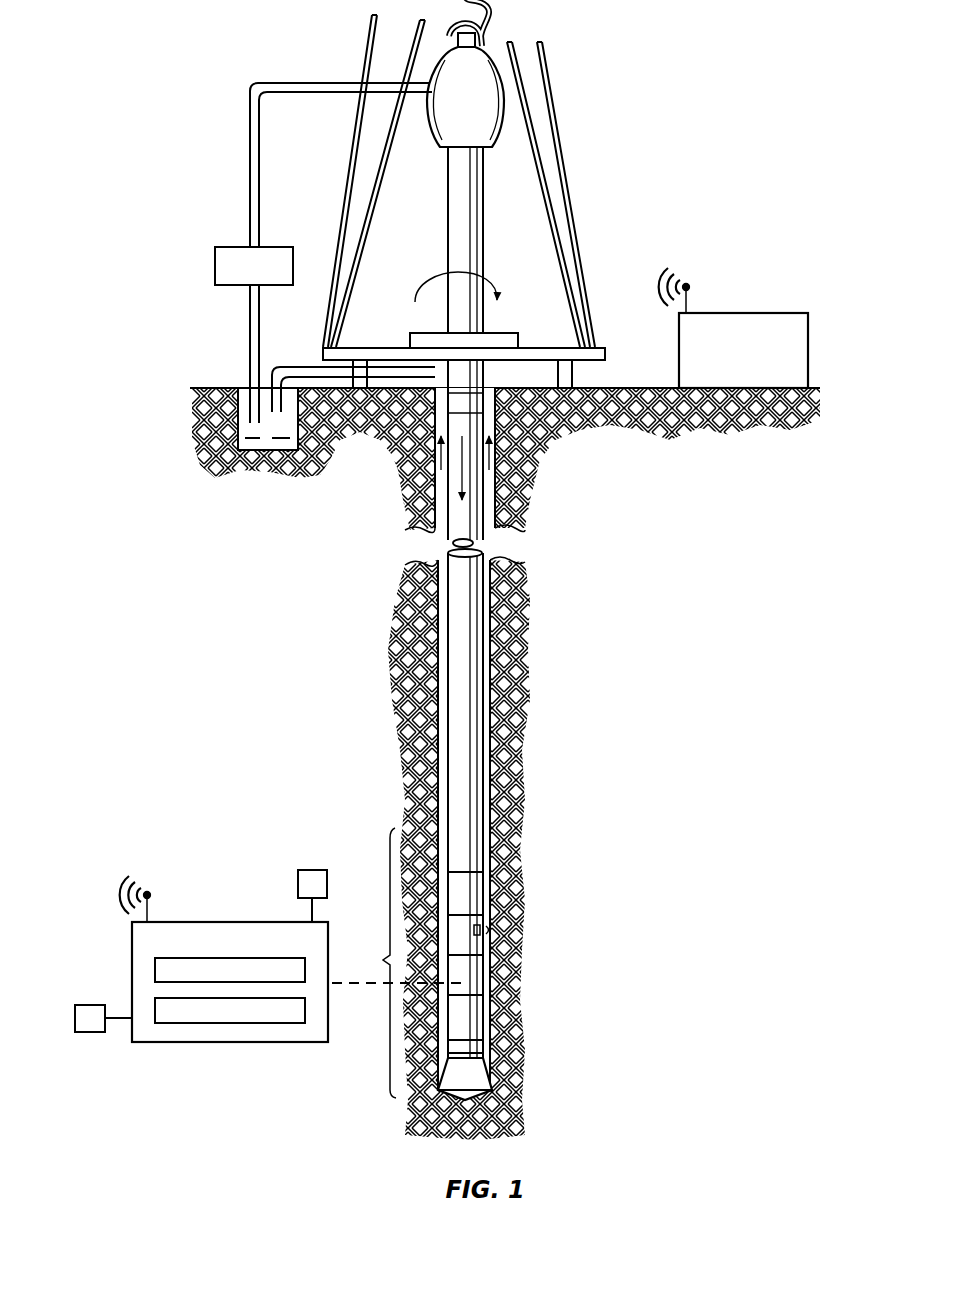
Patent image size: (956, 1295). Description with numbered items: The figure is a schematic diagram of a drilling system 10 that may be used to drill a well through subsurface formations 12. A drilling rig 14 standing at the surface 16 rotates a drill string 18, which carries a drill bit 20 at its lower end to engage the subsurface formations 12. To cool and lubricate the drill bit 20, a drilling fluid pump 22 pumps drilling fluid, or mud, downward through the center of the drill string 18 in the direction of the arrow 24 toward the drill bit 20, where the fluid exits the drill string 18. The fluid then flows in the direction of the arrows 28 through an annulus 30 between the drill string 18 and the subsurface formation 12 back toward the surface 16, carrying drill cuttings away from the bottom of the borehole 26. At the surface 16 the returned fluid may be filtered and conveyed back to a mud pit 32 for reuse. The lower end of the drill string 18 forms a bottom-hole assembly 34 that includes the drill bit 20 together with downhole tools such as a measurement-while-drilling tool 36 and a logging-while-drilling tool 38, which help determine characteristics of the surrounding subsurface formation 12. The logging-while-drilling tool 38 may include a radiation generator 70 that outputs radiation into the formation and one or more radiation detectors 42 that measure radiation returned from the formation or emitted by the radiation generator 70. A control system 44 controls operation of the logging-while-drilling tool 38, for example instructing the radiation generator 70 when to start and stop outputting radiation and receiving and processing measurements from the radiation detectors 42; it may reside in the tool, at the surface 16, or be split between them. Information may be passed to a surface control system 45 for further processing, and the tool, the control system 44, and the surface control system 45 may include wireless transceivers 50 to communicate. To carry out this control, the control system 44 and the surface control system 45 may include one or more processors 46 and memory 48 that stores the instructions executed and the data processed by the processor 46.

The drilling system 10 is at (499, 173).
The subsurface formations 12 is at (618, 737).
The drilling rig 14 is at (577, 103).
The surface 16 is at (641, 384).
The drill string 18 is at (460, 382).
The drill bit 20 is at (470, 1078).
The drilling fluid pump 22 is at (215, 264).
The arrow 24 is at (462, 490).
The borehole 26 is at (437, 752).
The arrows 28 is at (437, 468).
The annulus 30 is at (489, 390).
The mud pit 32 is at (273, 452).
The bottom-hole assembly 34 is at (383, 958).
The measurement-while-drilling (MWD) tool 36 is at (470, 895).
The logging-while-drilling (LWD) tool 38 is at (470, 973).
The radiation detectors 42 is at (95, 1033).
The control system 44 is at (215, 970).
The surface control system 45 is at (783, 313).
The processor 46 is at (155, 968).
The memory 48 is at (155, 1010).
The wireless transceivers 50 is at (692, 284).
The radiation generator 70 is at (298, 886).